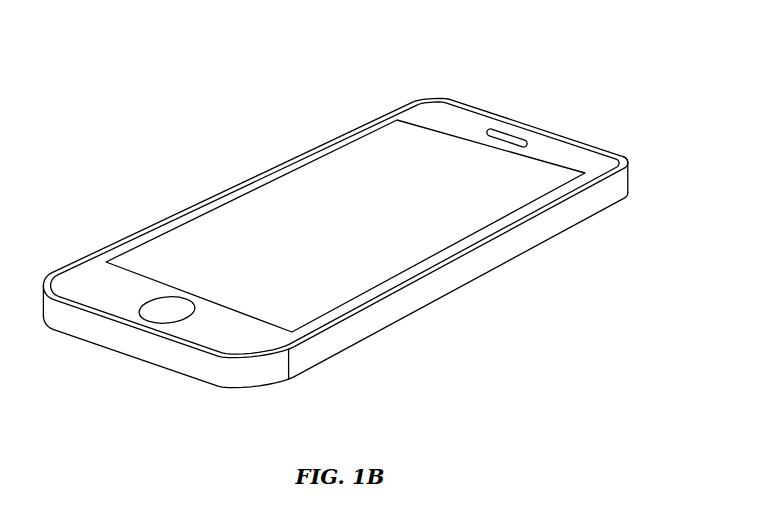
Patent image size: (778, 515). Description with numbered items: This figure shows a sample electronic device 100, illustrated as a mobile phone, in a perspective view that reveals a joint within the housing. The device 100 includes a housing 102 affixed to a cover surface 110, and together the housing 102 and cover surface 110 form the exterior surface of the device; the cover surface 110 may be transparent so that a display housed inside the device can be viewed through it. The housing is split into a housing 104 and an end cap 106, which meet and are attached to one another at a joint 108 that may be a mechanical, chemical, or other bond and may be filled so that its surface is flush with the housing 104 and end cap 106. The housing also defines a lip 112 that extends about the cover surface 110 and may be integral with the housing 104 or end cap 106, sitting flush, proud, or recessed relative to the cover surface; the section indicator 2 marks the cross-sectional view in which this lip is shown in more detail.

The electronic device 100 is at (215, 52).
The housing 102 is at (652, 178).
The housing 104 is at (328, 361).
The end cap 106 is at (241, 396).
The joint 108 is at (75, 262).
The cover surface 110 is at (301, 168).
The lip 112 is at (627, 156).
The section line for FIG. 2 is at (227, 190).